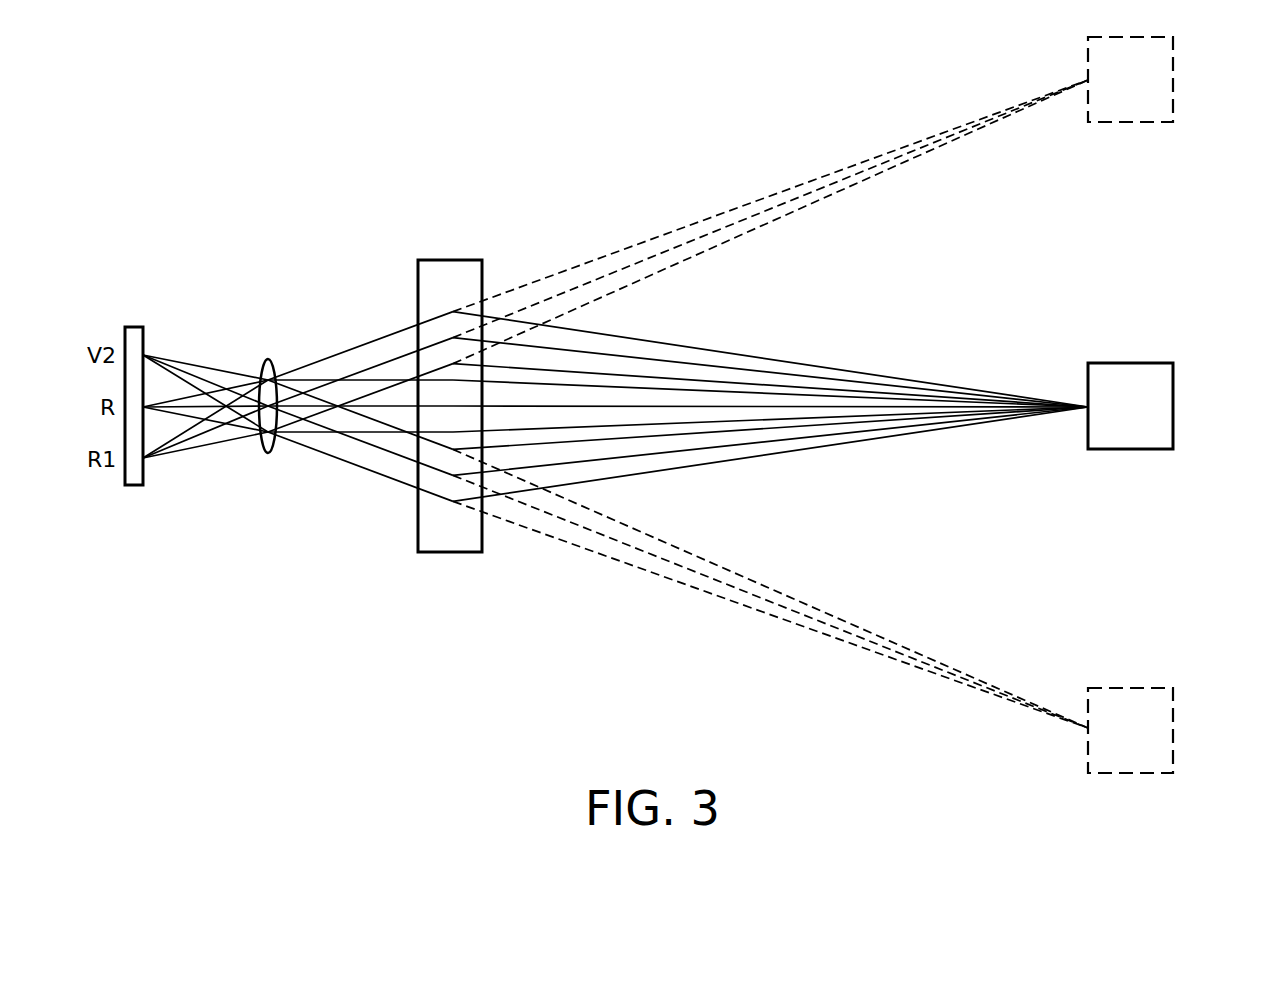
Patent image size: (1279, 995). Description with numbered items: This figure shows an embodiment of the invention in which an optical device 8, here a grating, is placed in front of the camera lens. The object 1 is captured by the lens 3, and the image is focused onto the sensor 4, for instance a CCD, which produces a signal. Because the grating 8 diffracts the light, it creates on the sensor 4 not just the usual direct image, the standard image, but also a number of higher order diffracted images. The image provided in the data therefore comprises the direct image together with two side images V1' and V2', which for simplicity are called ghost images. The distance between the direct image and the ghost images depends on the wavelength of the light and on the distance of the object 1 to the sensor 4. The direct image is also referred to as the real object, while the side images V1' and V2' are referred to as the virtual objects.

The object 1 is at (1173, 407).
The lens 3 is at (265, 448).
The sensor 4 is at (136, 478).
The optical device 8 is at (453, 544).
The side image V1' is at (1175, 79).
The side image V2' is at (1175, 730).